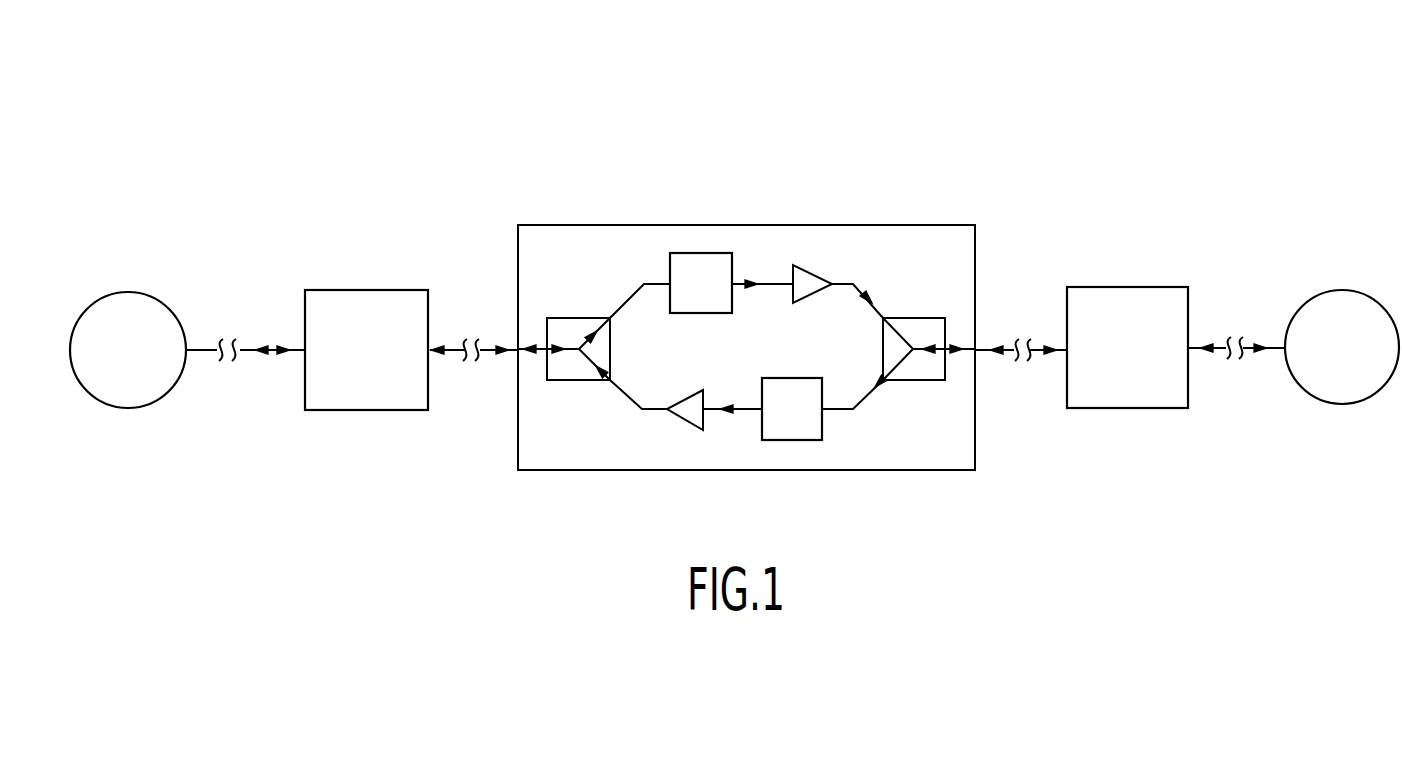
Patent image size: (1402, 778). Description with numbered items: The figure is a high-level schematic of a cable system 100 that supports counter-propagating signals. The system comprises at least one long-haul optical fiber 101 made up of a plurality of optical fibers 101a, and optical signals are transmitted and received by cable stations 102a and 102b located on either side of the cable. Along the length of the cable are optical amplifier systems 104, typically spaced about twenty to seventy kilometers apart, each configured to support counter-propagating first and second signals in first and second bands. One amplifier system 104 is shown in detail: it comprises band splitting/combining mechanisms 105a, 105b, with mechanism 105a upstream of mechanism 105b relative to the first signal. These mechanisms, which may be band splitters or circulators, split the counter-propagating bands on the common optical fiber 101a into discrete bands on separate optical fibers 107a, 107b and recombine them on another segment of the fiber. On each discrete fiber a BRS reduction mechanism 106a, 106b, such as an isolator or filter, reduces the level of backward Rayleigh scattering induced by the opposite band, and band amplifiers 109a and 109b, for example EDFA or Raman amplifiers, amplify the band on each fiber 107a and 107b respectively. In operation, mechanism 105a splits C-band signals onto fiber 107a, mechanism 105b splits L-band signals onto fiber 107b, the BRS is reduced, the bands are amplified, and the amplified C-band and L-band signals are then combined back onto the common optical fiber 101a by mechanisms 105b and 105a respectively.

The cable system 100 is at (660, 82).
The long-haul optical fiber 101 is at (273, 316).
The optical fiber 101a is at (197, 350).
The cable station 102a is at (128, 293).
The cable station 102b is at (1347, 290).
The optical amplifier system 104 is at (336, 290).
The band splitting/combining mechanism 105a is at (570, 317).
The band splitting/combining mechanism 105b is at (933, 317).
The BRS reduction mechanism 106a is at (692, 315).
The BRS reduction mechanism 106b is at (798, 440).
The optical fiber 107a is at (777, 283).
The optical fiber 107b is at (747, 412).
The band amplifier 109a is at (812, 268).
The band amplifier 109b is at (702, 430).